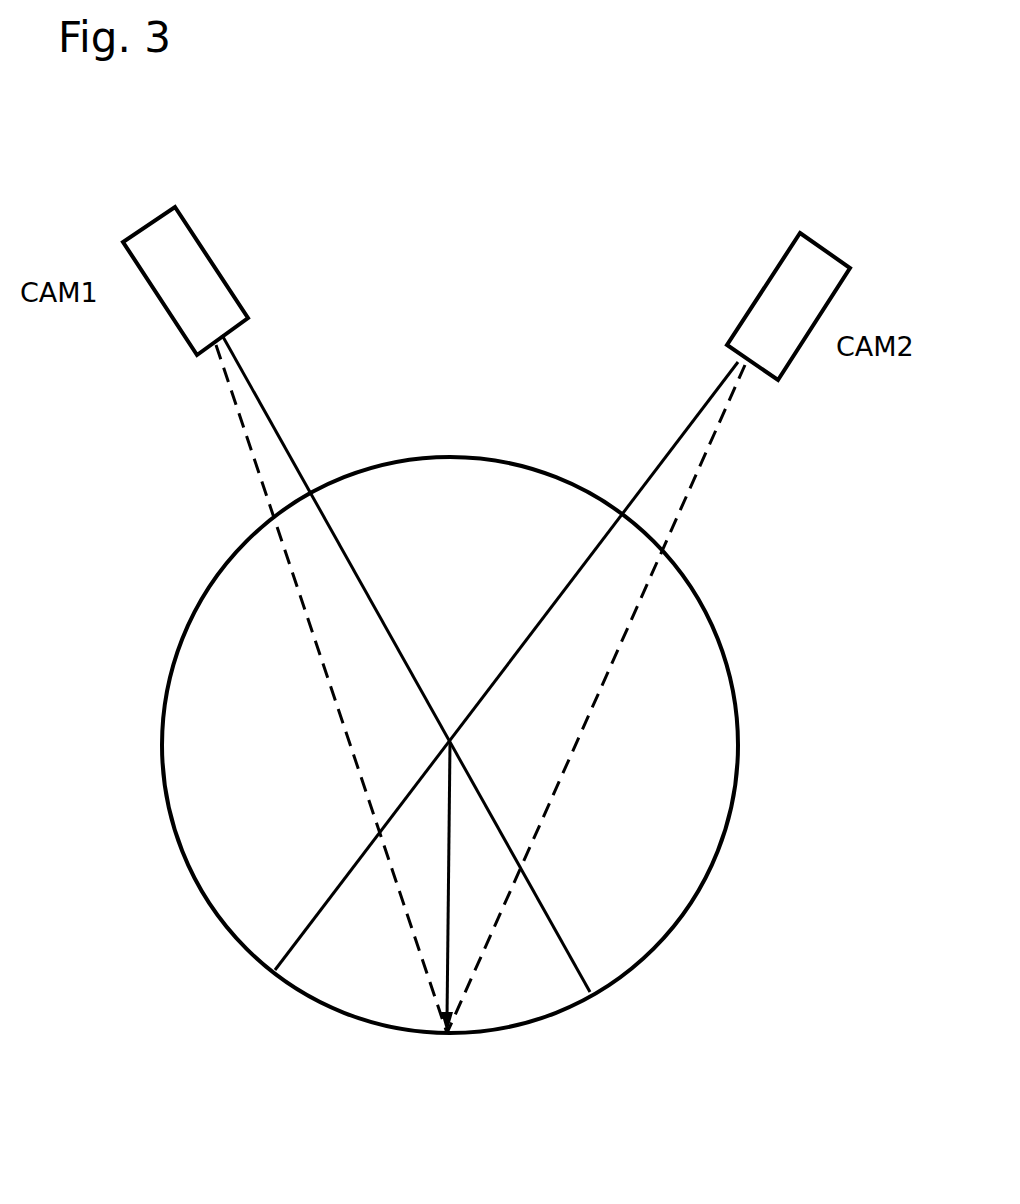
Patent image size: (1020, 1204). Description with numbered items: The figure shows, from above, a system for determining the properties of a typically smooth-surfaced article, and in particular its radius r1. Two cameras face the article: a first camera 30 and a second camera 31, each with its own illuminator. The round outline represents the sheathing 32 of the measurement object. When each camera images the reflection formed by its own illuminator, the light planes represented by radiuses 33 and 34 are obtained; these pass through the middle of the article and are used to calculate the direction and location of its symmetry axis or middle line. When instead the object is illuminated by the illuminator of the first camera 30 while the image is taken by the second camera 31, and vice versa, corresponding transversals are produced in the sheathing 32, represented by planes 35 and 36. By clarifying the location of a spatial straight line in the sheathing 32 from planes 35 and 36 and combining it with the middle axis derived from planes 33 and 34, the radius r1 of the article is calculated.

The first camera 30 is at (207, 240).
The second camera 31 is at (764, 282).
The sheathing of the measurement object 32 is at (246, 953).
The radius representing plane of first camera's light 33 is at (276, 420).
The radius representing plane of second camera's light 34 is at (696, 422).
The plane formed by cross-illumination 35 is at (604, 676).
The plane formed by cross-illumination 36 is at (324, 662).
The radius of the article r1 is at (448, 852).